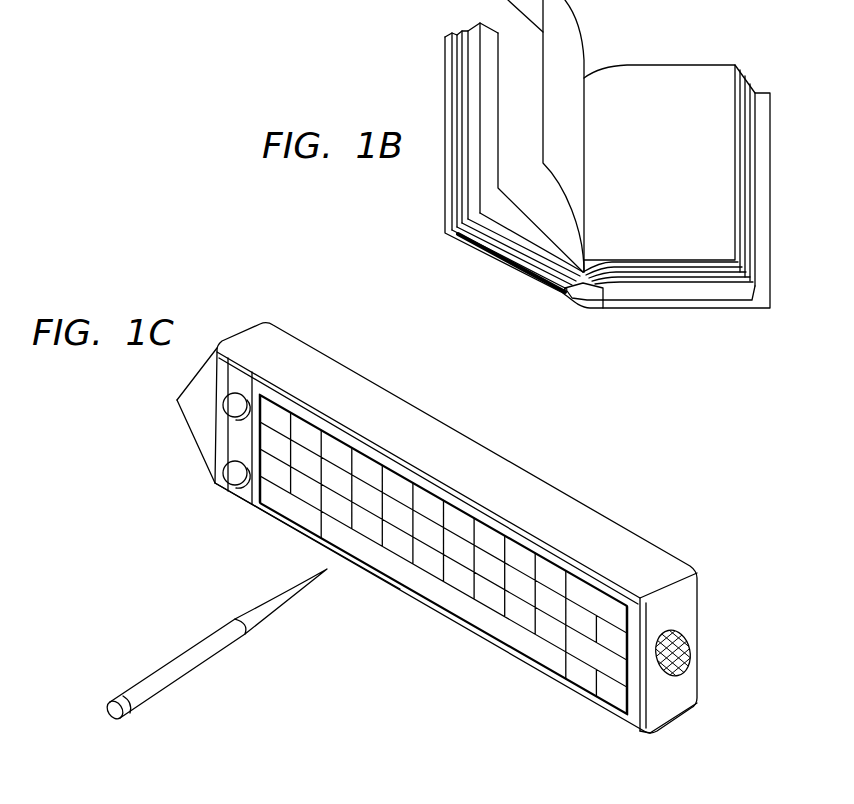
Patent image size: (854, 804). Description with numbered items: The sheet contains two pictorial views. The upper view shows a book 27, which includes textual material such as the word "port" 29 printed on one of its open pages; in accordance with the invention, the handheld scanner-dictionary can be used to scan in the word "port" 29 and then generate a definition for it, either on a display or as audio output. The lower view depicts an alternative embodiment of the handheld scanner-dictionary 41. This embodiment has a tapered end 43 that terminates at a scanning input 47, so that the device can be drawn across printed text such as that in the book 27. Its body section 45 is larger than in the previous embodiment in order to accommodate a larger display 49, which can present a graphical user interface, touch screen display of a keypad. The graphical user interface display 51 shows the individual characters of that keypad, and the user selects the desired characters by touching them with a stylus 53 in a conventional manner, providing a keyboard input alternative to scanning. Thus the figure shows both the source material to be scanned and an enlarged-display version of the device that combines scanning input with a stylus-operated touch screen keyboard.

In FIG. 1B, the book 27 is at (683, 63).
In FIG. 1B, the word "port" 29 is at (637, 135).
In FIG. 1C, the handheld scanner-dictionary 41 is at (607, 468).
In FIG. 1C, the tapered end 43 is at (193, 447).
In FIG. 1C, the body section 45 is at (487, 457).
In FIG. 1C, the scanning input 47 is at (177, 400).
In FIG. 1C, the display 49 is at (632, 718).
In FIG. 1C, the graphical user interface display 51 is at (387, 567).
In FIG. 1C, the stylus 53 is at (205, 641).